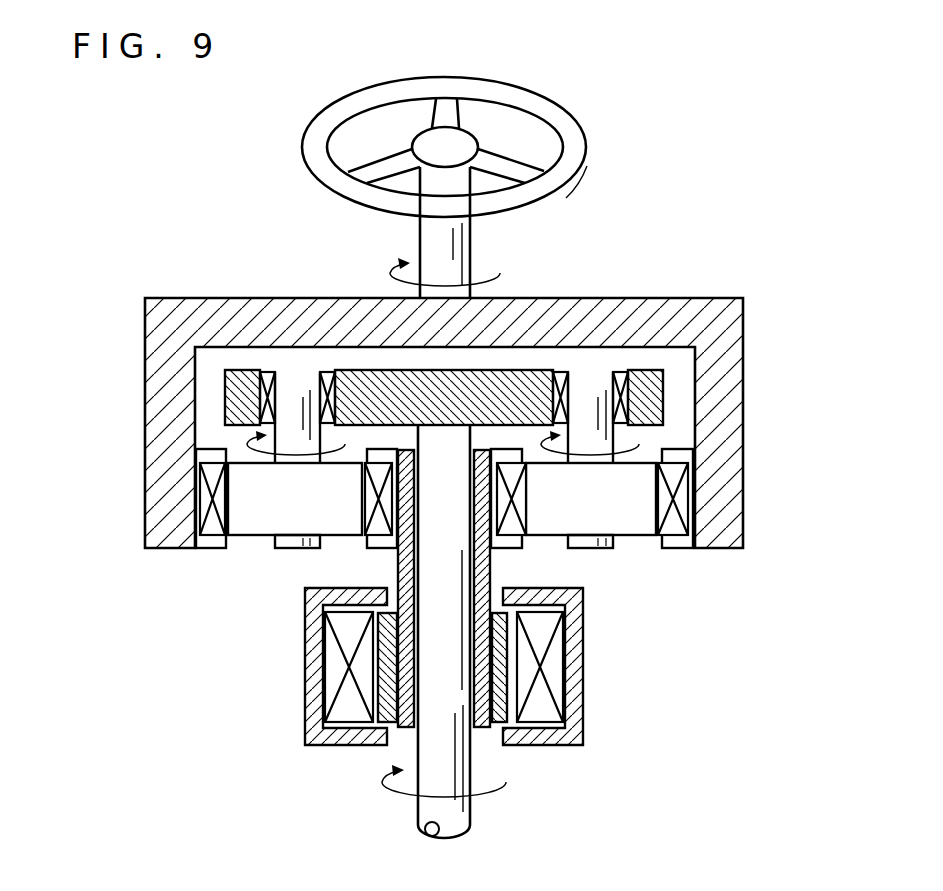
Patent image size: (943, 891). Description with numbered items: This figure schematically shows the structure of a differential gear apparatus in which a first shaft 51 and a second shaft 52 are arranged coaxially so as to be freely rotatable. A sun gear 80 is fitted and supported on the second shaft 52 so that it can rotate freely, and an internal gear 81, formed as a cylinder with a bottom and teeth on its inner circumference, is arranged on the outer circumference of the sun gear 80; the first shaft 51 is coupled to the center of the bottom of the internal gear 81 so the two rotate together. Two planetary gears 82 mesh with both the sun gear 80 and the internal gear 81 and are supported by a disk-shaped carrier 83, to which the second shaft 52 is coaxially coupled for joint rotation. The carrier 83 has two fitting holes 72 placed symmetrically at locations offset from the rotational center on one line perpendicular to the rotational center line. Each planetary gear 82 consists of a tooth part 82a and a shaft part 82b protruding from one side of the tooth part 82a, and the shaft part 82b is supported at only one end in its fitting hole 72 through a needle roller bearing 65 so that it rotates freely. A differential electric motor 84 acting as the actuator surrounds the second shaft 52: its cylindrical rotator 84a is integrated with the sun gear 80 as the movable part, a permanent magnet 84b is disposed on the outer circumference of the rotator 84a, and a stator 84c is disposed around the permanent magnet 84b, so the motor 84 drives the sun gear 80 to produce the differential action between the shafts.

The first shaft 51 is at (470, 228).
The second shaft 52 is at (468, 815).
The needle roller bearing 65 is at (258, 385).
The fitting hole 72 is at (290, 400).
The sun gear 80 is at (383, 452).
The internal gear 81 is at (738, 455).
The planetary gear 82 is at (250, 545).
The tooth part 82a is at (205, 495).
The shaft part 82b is at (285, 405).
The carrier 83 is at (514, 372).
The differential electric motor 84 is at (512, 625).
The rotator 84a is at (485, 628).
The permanent magnet 84b is at (503, 662).
The stator 84c is at (560, 690).